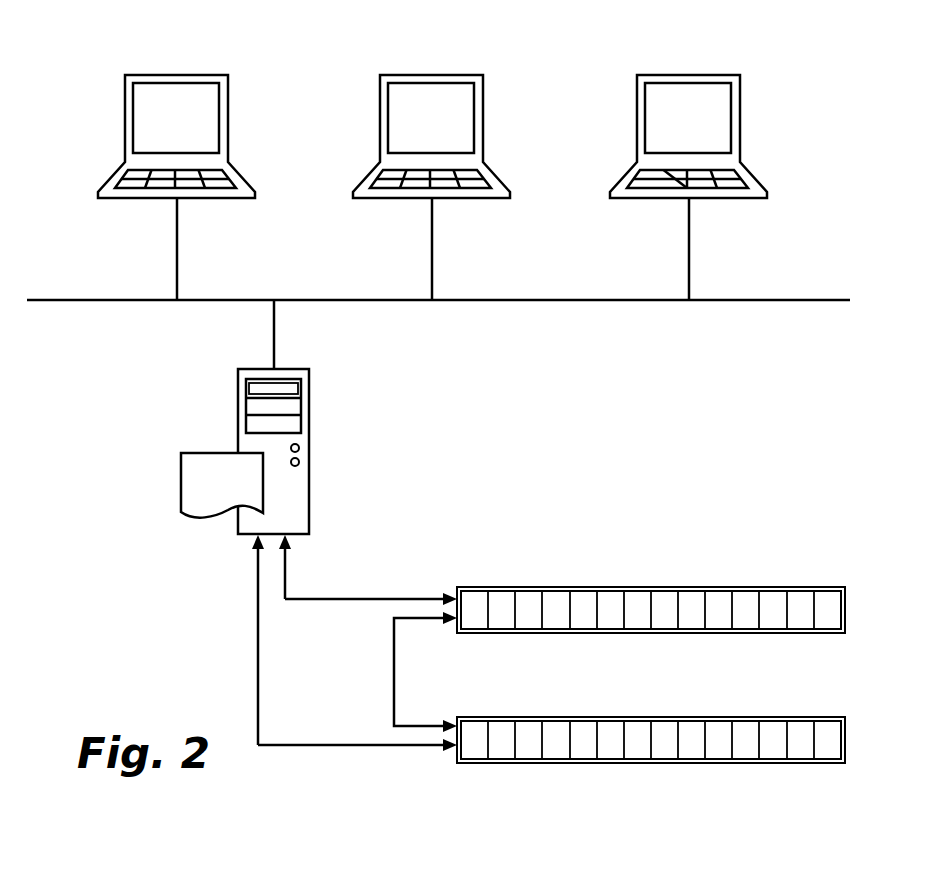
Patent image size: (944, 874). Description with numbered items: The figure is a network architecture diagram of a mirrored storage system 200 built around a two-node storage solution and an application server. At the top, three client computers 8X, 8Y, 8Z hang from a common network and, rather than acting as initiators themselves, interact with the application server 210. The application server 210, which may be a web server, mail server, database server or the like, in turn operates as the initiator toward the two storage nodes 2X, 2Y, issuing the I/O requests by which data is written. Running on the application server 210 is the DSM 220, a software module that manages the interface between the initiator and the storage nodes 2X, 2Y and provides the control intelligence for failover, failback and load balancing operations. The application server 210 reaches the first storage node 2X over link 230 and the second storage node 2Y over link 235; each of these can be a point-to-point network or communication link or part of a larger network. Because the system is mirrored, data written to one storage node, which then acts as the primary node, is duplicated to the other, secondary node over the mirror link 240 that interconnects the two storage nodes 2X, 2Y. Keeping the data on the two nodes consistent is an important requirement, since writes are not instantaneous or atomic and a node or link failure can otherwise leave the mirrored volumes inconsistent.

The mirrored storage system 200 is at (90, 56).
The client computer 8X is at (222, 198).
The client computer 8Y is at (477, 198).
The client computer 8Z is at (734, 198).
The application server 210 is at (310, 378).
The DSM 220 is at (195, 452).
The link 230 is at (392, 599).
The link 235 is at (337, 745).
The mirror link 240 is at (394, 675).
The storage node 2X is at (773, 587).
The storage node 2Y is at (775, 717).